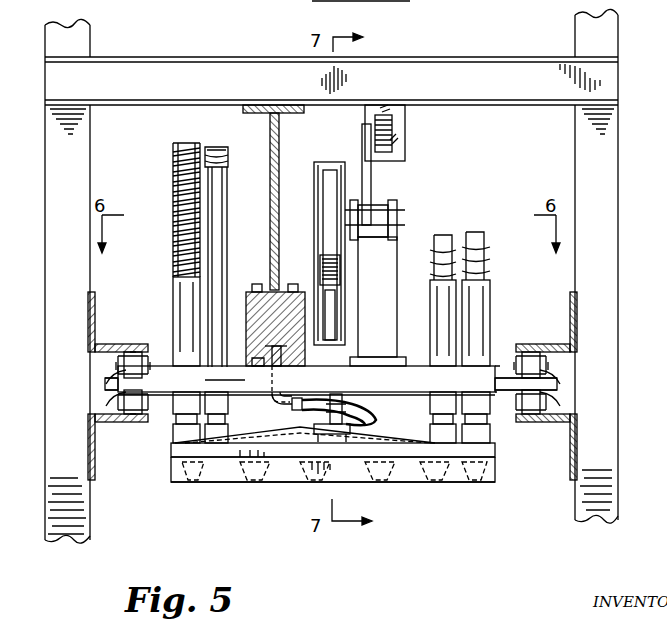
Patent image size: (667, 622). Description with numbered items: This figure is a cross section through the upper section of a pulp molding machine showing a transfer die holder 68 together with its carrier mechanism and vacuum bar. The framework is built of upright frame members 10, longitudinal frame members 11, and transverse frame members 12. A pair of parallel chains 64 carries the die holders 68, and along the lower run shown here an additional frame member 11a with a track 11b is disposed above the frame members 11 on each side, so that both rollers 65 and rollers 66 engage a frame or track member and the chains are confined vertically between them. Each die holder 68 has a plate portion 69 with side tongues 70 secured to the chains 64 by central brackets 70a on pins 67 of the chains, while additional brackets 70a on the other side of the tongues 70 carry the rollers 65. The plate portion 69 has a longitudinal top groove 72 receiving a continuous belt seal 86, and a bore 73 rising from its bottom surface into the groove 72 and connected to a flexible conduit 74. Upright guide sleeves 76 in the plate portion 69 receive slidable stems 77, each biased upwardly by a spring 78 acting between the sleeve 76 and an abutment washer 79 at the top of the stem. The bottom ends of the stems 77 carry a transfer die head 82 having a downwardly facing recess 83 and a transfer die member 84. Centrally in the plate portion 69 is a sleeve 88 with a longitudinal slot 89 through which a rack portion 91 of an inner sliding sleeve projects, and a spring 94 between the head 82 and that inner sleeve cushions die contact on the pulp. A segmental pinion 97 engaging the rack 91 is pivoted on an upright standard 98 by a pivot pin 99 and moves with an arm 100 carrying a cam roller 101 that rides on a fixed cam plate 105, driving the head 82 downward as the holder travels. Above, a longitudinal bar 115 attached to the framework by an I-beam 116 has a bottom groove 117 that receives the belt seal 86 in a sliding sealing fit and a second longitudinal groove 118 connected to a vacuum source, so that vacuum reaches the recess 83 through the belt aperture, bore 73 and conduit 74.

The upright frame members 10 is at (50, 405).
The longitudinal frame members 11 is at (88, 440).
The additional frame member 11a is at (90, 310).
The track 11b is at (96, 348).
The transverse frame members 12 is at (160, 57).
The chains 64 is at (146, 360).
The rollers 65 is at (128, 416).
The rollers 66 is at (130, 350).
The pins 67 is at (116, 432).
The transfer die holders 68 is at (428, 388).
The plate portion 69 is at (492, 412).
The side tongues 70 is at (105, 390).
The brackets 70a is at (114, 374).
The top groove 72 is at (260, 356).
The bore 73 is at (272, 392).
The flexible conduit 74 is at (376, 405).
The guide sleeves 76 is at (214, 298).
The stems 77 is at (174, 196).
The spring 78 is at (174, 164).
The abutment washer 79 is at (213, 147).
The transfer die head 82 is at (238, 448).
The recess 83 is at (294, 452).
The transfer die member 84 is at (418, 474).
The belt seal 86 is at (314, 364).
The sleeve 88 is at (330, 162).
The longitudinal slot 89 is at (330, 333).
The rack portion 91 is at (322, 276).
The spring 94 is at (314, 424).
The segmental pinion 97 is at (328, 192).
The upright standard 98 is at (392, 256).
The pivot pin 99 is at (396, 218).
The arm 100 is at (372, 174).
The cam roller 101 is at (390, 128).
The cam plate 105 is at (400, 110).
The longitudinal bar 115 is at (244, 300).
The I-beam 116 is at (270, 154).
The bottom groove 117 is at (212, 380).
The second longitudinal groove 118 is at (280, 368).